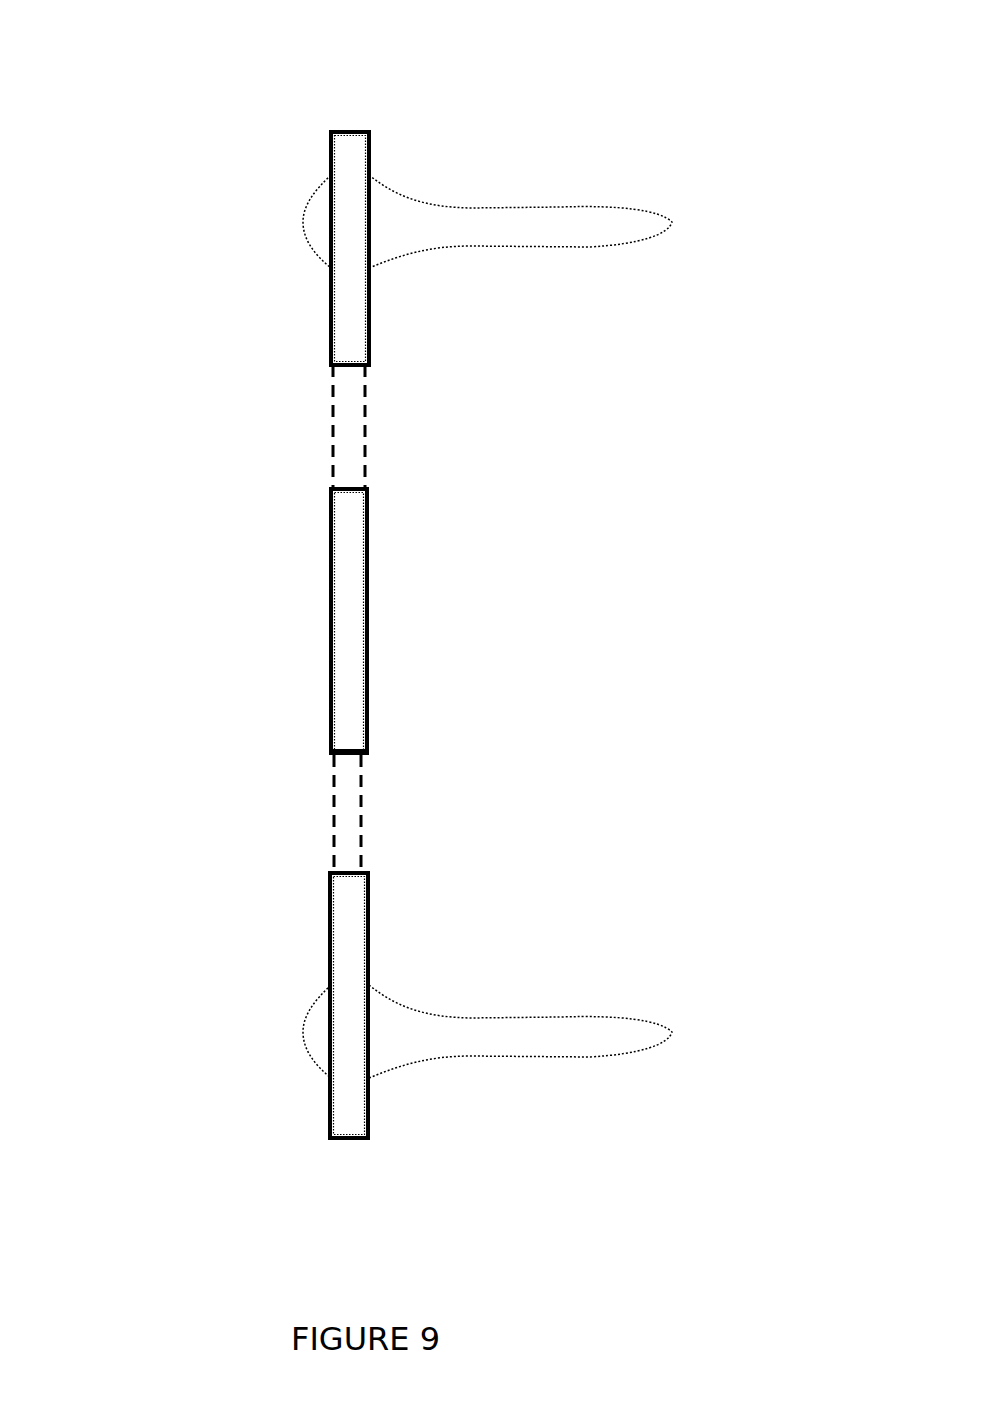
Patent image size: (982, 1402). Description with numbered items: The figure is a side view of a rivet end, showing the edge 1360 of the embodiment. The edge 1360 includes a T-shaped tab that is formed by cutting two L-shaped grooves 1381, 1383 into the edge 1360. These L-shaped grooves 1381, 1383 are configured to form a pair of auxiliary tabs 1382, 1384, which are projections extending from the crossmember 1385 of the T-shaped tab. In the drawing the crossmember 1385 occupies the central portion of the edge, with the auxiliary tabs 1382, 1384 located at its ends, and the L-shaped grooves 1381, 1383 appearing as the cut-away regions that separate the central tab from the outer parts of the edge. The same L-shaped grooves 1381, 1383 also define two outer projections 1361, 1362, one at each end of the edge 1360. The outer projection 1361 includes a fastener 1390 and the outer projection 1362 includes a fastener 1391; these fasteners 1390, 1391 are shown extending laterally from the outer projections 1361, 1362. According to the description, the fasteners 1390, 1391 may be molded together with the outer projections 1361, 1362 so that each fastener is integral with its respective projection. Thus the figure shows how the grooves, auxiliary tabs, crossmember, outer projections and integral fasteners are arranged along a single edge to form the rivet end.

The edge 1360 is at (142, 100).
The outer projection 1361 is at (350, 134).
The outer projection 1362 is at (350, 1109).
The L-shaped groove 1381 is at (362, 425).
The auxiliary tab 1382 is at (343, 523).
The L-shaped groove 1383 is at (347, 810).
The auxiliary tab 1384 is at (345, 726).
The crossmember 1385 is at (369, 620).
The fastener 1390 is at (622, 220).
The fastener 1391 is at (567, 1027).